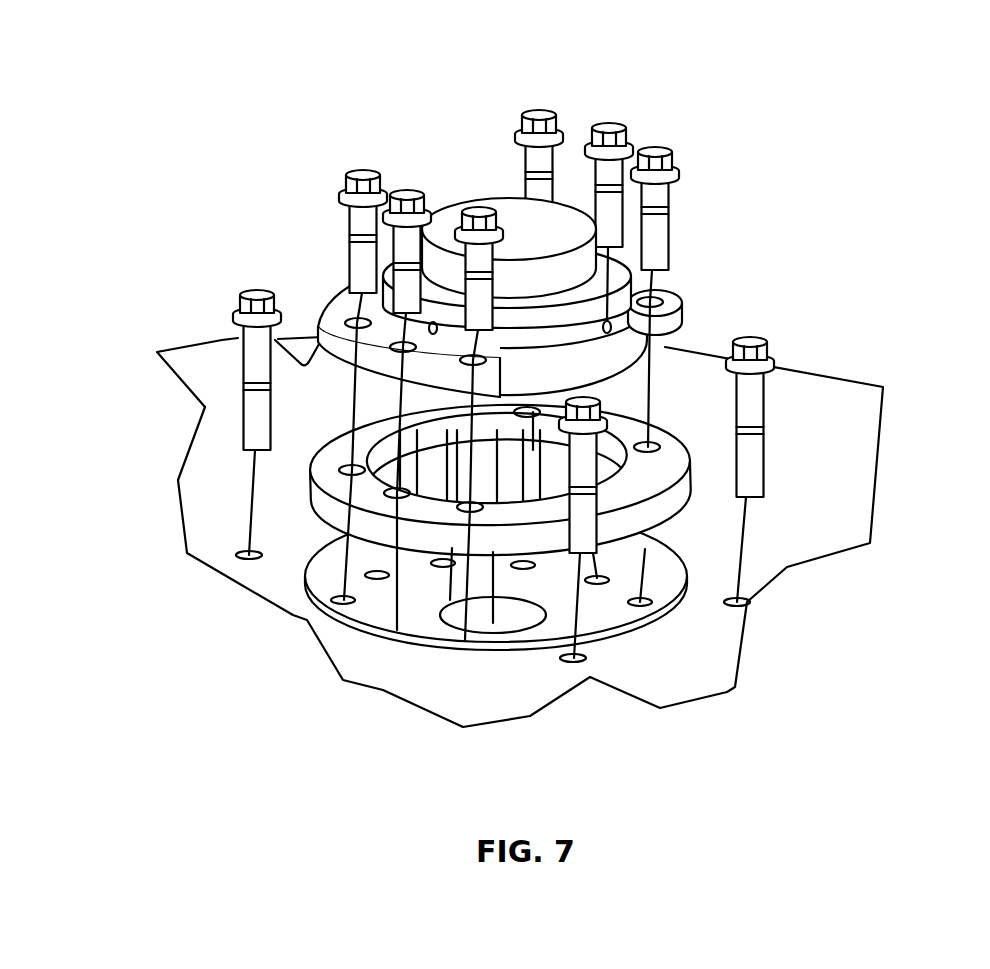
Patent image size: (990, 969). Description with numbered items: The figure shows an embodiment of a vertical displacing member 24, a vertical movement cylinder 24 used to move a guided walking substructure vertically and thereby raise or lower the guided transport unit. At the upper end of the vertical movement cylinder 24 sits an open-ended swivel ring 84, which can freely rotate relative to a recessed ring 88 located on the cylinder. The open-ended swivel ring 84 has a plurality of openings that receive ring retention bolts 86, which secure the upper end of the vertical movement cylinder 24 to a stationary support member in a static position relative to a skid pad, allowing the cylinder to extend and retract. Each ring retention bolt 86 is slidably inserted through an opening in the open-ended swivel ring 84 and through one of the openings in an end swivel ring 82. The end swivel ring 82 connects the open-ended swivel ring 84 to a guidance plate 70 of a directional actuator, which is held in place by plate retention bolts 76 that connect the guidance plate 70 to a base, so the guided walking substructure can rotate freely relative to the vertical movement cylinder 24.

The vertical displacing member 24 is at (527, 230).
The guidance plate 70 is at (793, 418).
The plate retention bolt 76 is at (747, 467).
The end swivel ring 82 is at (513, 537).
The open-ended swivel ring 84 is at (340, 302).
The ring retention bolt 86 is at (653, 193).
The recessed ring 88 is at (573, 360).